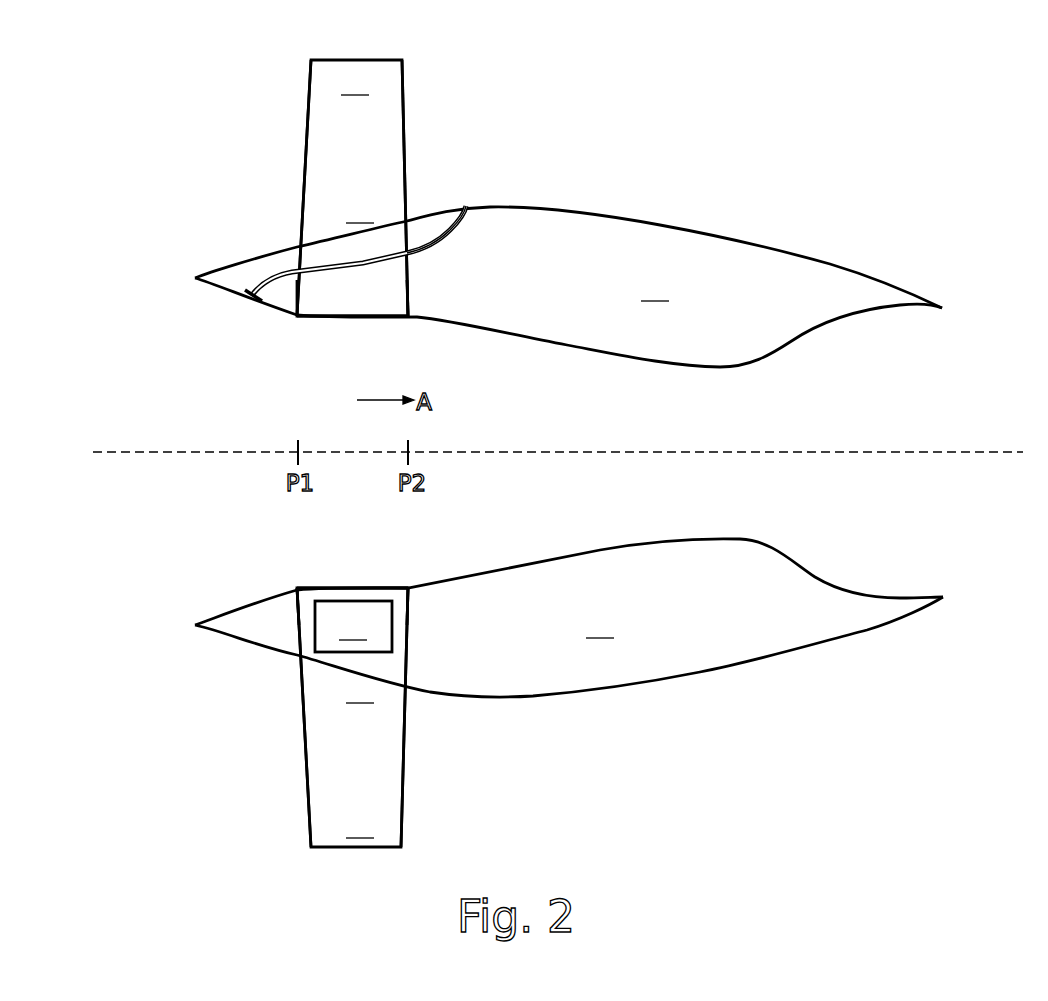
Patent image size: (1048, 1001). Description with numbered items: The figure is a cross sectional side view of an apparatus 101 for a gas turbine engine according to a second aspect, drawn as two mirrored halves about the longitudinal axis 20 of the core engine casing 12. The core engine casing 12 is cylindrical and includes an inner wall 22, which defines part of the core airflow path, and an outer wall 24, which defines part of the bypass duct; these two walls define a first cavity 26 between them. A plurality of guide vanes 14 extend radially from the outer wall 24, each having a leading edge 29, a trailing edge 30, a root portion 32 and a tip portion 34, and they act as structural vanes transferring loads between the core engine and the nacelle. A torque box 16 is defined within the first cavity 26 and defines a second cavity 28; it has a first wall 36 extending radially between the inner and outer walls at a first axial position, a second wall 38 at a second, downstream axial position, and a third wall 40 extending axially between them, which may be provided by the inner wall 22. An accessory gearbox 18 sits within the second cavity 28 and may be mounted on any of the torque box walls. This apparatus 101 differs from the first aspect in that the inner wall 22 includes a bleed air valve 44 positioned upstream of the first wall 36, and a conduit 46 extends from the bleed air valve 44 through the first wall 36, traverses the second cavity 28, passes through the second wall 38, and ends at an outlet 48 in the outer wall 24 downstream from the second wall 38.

The apparatus 101 is at (87, 100).
The core engine casing 12 is at (569, 447).
The guide vanes 14 is at (352, 446).
The torque box 16 is at (362, 445).
The accessory gearbox 18 is at (353, 626).
The longitudinal axis 20 is at (973, 452).
The inner wall 22 is at (580, 352).
The outer wall 24 is at (623, 218).
The first cavity 26 is at (627, 456).
The second cavity 28 is at (317, 313).
The leading edge 29 is at (305, 112).
The trailing edge 30 is at (407, 108).
The root portion 32 is at (359, 450).
The tip portion 34 is at (357, 453).
The first wall 36 is at (292, 303).
The second wall 38 is at (410, 293).
The third wall 40 is at (350, 318).
The bleed air valve 44 is at (245, 298).
The conduit 46 is at (440, 247).
The outlet 48 is at (460, 213).